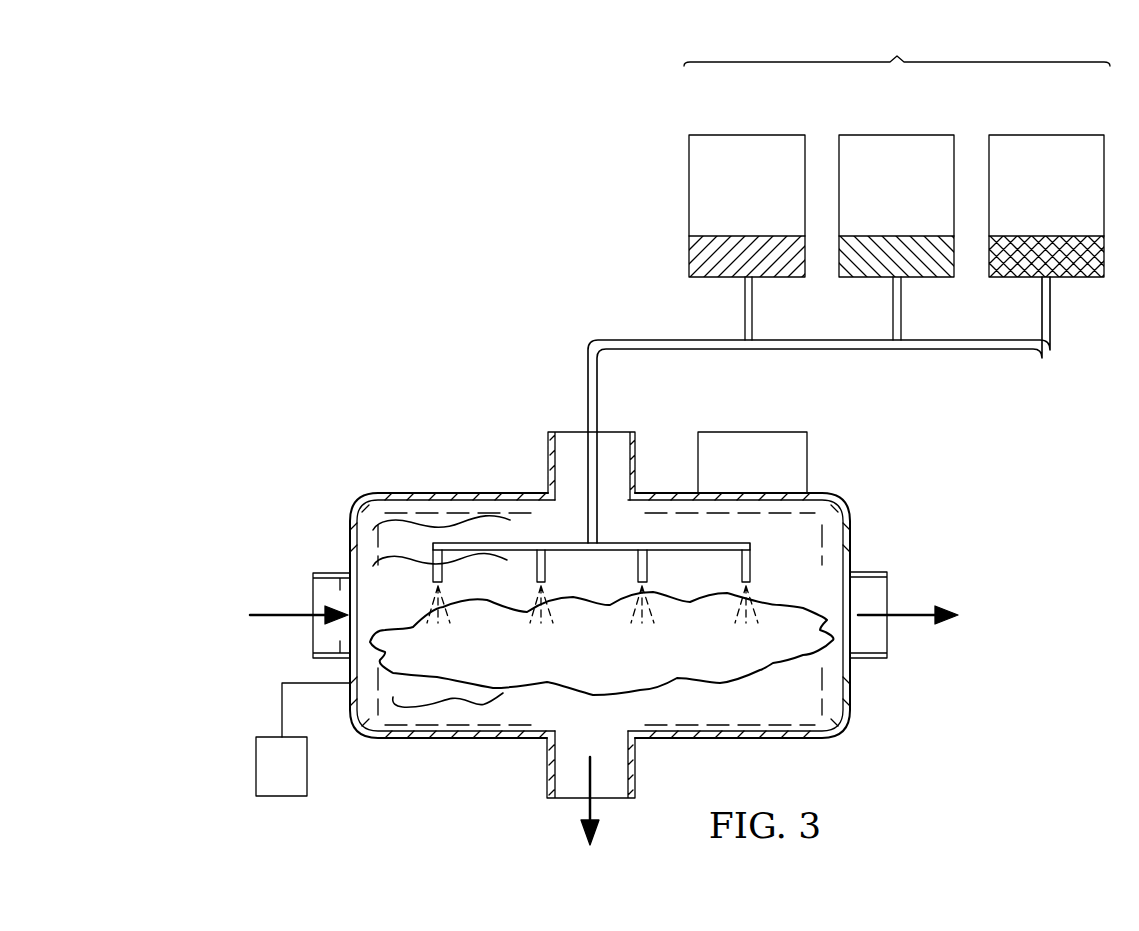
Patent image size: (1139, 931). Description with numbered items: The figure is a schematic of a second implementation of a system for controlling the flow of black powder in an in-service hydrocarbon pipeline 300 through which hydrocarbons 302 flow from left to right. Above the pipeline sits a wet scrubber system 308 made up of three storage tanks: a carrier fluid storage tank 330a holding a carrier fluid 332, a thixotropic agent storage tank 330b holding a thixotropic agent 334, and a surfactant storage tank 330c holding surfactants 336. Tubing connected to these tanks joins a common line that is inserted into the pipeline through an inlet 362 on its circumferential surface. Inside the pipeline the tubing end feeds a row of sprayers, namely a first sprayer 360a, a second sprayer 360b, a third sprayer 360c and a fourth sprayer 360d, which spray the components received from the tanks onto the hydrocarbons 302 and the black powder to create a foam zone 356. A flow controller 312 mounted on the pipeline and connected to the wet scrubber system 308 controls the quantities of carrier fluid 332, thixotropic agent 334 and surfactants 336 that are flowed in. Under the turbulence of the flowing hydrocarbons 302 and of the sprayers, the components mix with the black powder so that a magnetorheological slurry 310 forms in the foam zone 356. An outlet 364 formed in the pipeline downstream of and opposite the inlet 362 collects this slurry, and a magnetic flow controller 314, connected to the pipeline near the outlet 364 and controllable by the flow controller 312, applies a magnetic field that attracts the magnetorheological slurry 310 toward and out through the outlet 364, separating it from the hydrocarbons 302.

The hydrocarbon pipeline 300 is at (410, 493).
The hydrocarbons 302 is at (383, 557).
The wet scrubber system 308 is at (863, 286).
The magnetorheological slurry 310 is at (767, 663).
The flow controller 312 is at (753, 432).
The magnetic flow controller 314 is at (256, 767).
The carrier fluid storage tank 330a is at (748, 143).
The thixotropic agent storage tank 330b is at (896, 143).
The surfactant storage tank 330c is at (1046, 143).
The carrier fluid 332 is at (788, 270).
The thixotropic agent 334 is at (925, 270).
The surfactants 336 is at (1078, 268).
The foam zone 356 is at (632, 663).
The first sprayer 360a is at (447, 573).
The second sprayer 360b is at (530, 567).
The third sprayer 360c is at (648, 570).
The fourth sprayer 360d is at (752, 572).
The inlet 362 is at (628, 445).
The outlet 364 is at (620, 787).